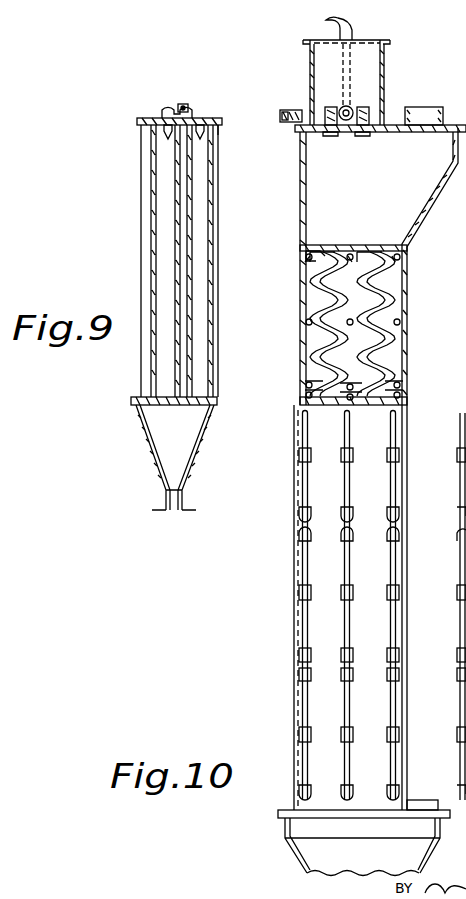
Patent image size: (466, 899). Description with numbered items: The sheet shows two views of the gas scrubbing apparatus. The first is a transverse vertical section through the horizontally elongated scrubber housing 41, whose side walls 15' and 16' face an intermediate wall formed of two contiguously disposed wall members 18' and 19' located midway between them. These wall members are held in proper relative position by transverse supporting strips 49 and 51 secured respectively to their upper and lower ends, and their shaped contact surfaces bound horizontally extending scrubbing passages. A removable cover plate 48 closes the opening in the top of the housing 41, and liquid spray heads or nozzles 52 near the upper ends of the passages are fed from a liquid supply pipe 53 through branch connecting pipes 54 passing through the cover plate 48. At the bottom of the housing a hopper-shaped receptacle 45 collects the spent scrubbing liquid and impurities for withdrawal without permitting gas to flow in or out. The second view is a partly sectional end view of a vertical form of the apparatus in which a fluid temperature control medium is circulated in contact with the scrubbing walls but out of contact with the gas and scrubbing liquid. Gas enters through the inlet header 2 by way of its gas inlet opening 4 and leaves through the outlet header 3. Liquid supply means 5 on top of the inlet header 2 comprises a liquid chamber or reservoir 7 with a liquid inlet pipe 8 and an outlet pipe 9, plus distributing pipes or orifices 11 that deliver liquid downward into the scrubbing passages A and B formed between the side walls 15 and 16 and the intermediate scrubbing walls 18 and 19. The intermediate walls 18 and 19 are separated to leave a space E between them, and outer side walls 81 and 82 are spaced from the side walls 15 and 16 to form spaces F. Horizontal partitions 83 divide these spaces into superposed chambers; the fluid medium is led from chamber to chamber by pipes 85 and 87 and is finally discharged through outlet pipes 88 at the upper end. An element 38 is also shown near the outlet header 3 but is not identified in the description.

In FIG. 10, the housing 2 is at (428, 210).
In FIG. 10, the base 3 is at (303, 852).
In FIG. 10, the block 4 is at (423, 108).
In FIG. 10, the container 5 is at (346, 82).
In FIG. 10, the plate 7 is at (385, 103).
In FIG. 10, the bracket 8 is at (293, 110).
In FIG. 10, the pipe 9 is at (352, 70).
In FIG. 10, the roller 11 is at (369, 114).
In FIG. 10, the corrugated strip 15 is at (299, 324).
In FIG. 10, the corrugated strip 16 is at (411, 324).
In FIG. 10, the strip end 18 is at (305, 306).
In FIG. 10, the strip end 19 is at (412, 309).
In FIG. 10, the block 38 is at (416, 800).
In FIG. 10, the bracket 81 is at (303, 385).
In FIG. 10, the bolt 82 is at (408, 320).
In FIG. 10, the bottom plate 83 is at (403, 384).
In FIG. 10, the rods 85 is at (458, 694).
In FIG. 10, the rod 87 is at (465, 420).
In FIG. 10, the top plate 88 is at (410, 258).
In FIG. 10, the strip A is at (338, 250).
In FIG. 10, the strip B is at (379, 250).
In FIG. 10, the space E is at (347, 355).
In FIG. 10, the space F is at (348, 356).
In FIG. 9, the outer tube 41 is at (225, 166).
In FIG. 9, the funnel 45 is at (186, 447).
In FIG. 9, the top plate 48 is at (214, 121).
In FIG. 9, the bottom plate 49 is at (195, 396).
In FIG. 9, the tube 51 is at (221, 134).
In FIG. 9, the nozzle 52 is at (166, 136).
In FIG. 9, the connector 53 is at (186, 104).
In FIG. 9, the pipe elbow 54 is at (171, 104).
In FIG. 9, the tube 15' is at (232, 261).
In FIG. 9, the tube 16' is at (121, 261).
In FIG. 9, the tube 18' is at (228, 261).
In FIG. 9, the tube 19' is at (137, 261).